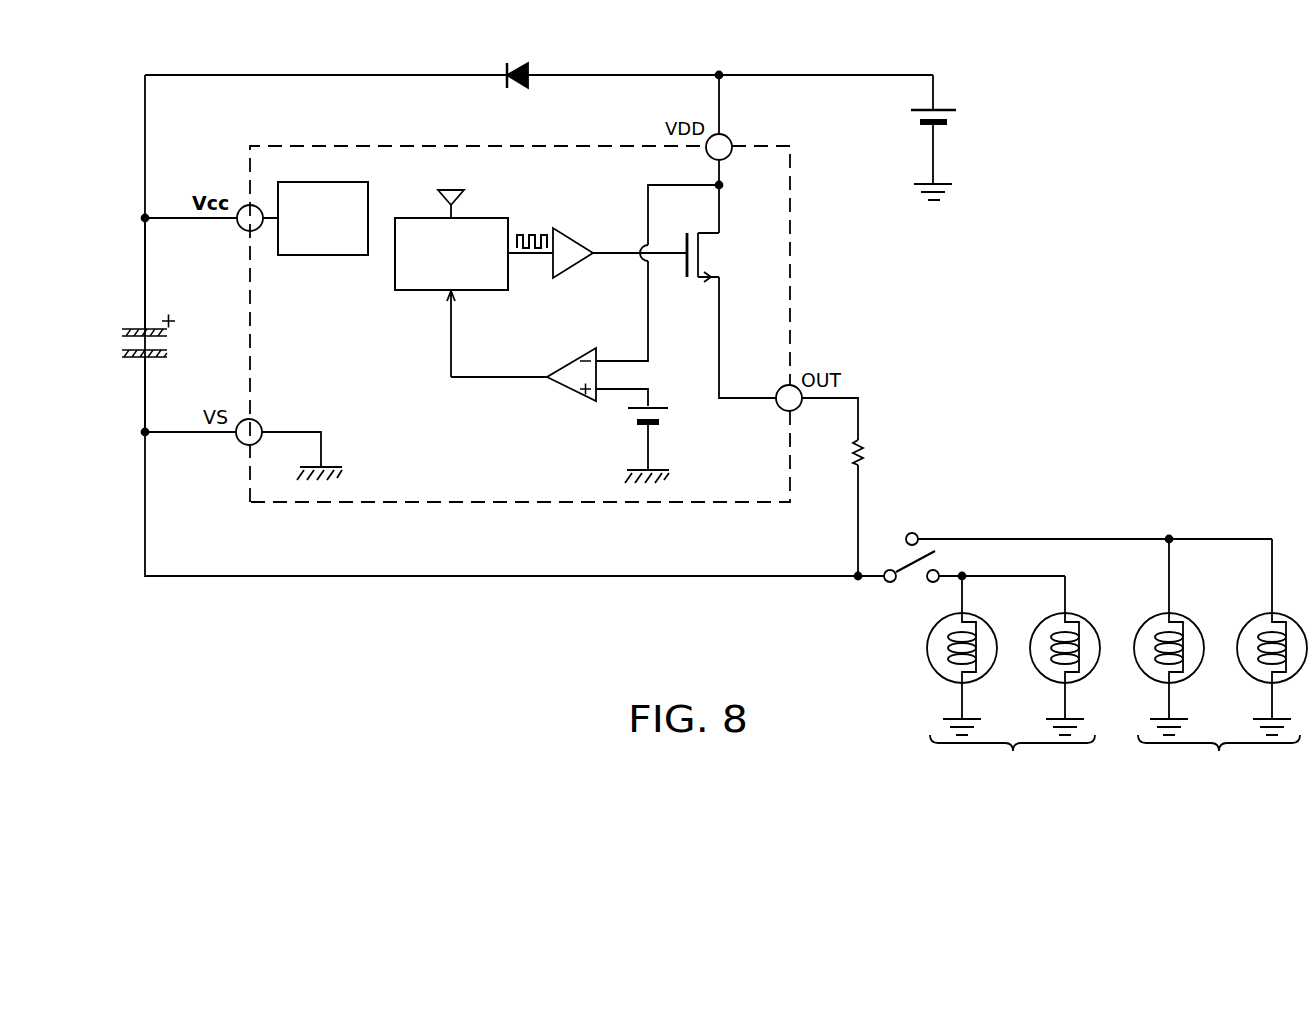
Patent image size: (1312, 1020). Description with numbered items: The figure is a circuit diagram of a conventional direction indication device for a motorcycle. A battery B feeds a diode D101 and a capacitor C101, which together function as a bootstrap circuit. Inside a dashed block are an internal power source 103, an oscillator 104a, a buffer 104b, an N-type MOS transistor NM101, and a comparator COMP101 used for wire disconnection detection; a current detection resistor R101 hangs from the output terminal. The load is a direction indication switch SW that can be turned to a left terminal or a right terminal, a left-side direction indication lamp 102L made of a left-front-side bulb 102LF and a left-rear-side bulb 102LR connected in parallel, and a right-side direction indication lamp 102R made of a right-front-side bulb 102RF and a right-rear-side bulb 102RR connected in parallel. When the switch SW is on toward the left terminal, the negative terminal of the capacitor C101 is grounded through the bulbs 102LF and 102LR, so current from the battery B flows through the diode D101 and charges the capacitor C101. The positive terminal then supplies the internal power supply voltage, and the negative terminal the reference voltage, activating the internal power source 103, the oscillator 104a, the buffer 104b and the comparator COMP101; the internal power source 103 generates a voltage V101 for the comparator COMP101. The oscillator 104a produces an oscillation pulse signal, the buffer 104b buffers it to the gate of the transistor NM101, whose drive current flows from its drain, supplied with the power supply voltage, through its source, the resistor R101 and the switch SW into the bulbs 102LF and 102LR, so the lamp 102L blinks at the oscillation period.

The diode D101 is at (515, 62).
The battery B is at (944, 137).
The capacitor C101 is at (117, 325).
The internal power source 103 is at (322, 255).
The oscillator 104a is at (415, 290).
The buffer 104b is at (572, 228).
The N-type MOS transistor NM101 is at (733, 257).
The comparator COMP101 is at (532, 390).
The voltage V101 is at (660, 436).
The current detection resistor R101 is at (889, 453).
The direction indication switch SW is at (900, 596).
The left-front-side bulb 102LF is at (937, 655).
The left-rear-side bulb 102LR is at (1043, 655).
The right-front-side bulb 102RF is at (1148, 637).
The right-rear-side bulb 102RR is at (1251, 637).
The left-side direction indication lamp 102L is at (1012, 759).
The right-side direction indication lamp 102R is at (1219, 759).